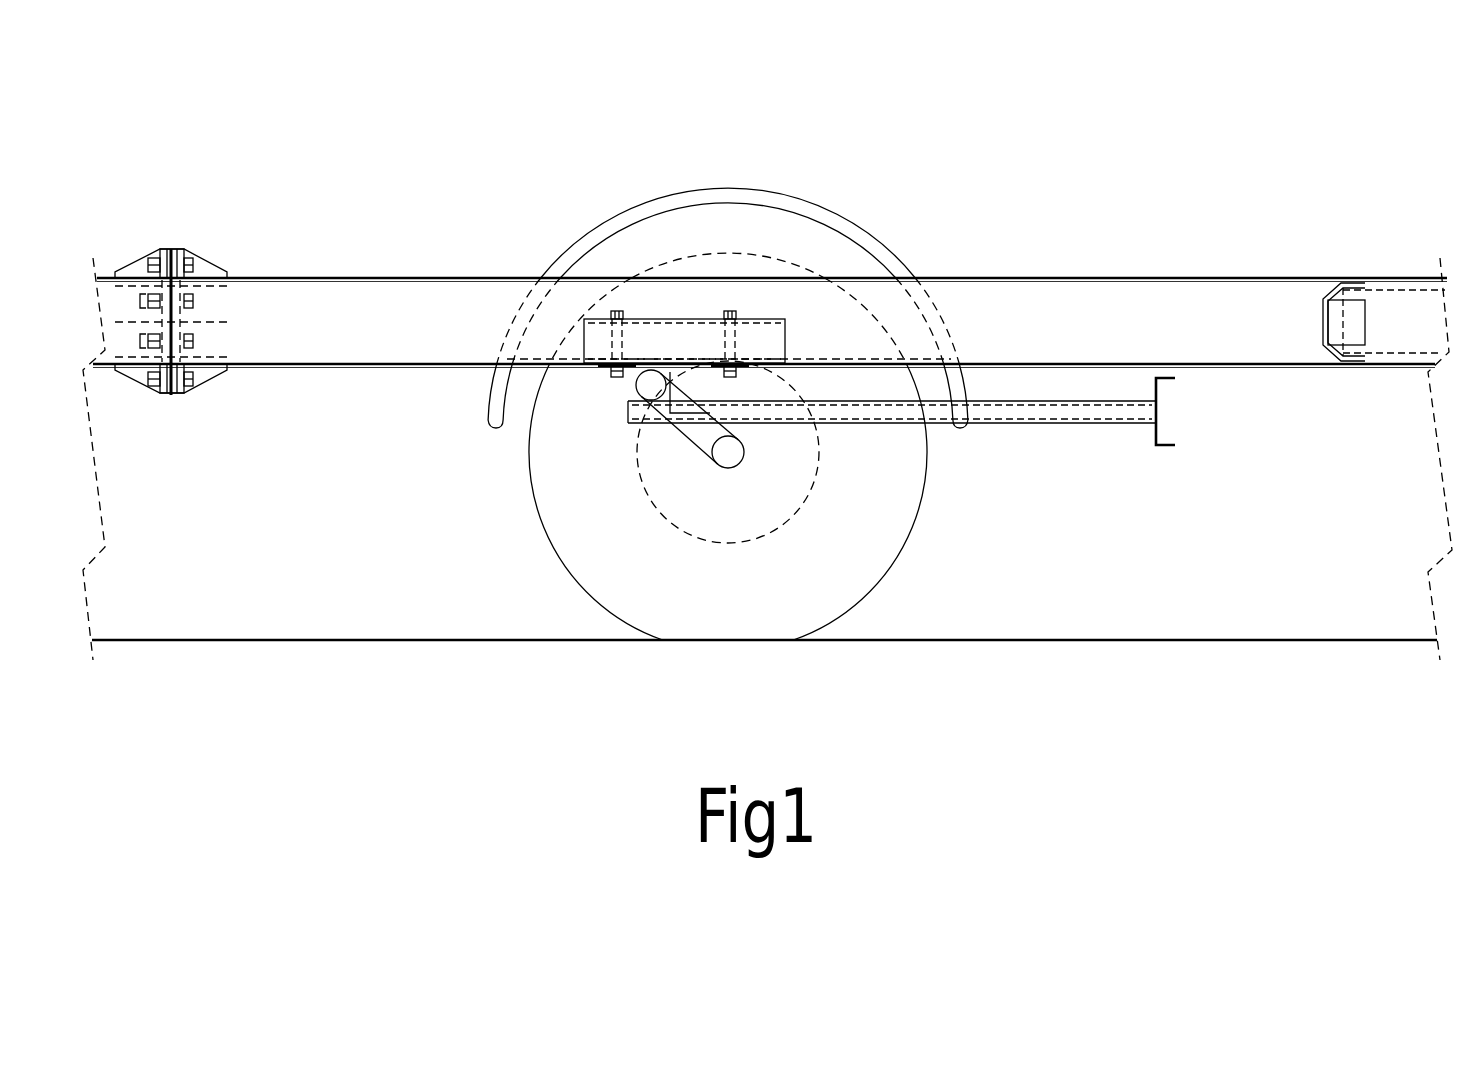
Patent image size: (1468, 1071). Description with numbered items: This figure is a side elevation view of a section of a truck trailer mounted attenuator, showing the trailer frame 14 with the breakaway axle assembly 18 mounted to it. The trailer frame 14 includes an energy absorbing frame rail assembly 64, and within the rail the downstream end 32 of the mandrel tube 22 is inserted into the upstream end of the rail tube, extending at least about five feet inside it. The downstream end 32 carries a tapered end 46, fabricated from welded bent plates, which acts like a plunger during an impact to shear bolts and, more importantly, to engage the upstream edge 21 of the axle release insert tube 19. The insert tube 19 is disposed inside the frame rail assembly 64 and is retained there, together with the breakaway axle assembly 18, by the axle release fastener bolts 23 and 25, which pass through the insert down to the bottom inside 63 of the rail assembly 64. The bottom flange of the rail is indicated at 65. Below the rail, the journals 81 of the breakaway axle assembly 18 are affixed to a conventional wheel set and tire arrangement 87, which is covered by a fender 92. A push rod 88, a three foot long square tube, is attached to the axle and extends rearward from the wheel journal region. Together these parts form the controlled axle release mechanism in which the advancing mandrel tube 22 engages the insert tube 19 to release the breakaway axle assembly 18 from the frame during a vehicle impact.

The trailer frame 14 is at (382, 276).
The breakaway axle assembly 18 is at (728, 294).
The axle release insert tube 19 is at (596, 314).
The upstream edge 21 is at (791, 340).
The mandrel tube 22 is at (1430, 306).
The axle release fastener bolt 23 is at (737, 338).
The axle release fastener bolt 25 is at (623, 338).
The downstream end 32 is at (1373, 264).
The tapered end 46 is at (1324, 296).
The bottom inside 63 is at (290, 359).
The frame rail assembly 64 is at (1012, 276).
The frame rail lower flange 65 is at (415, 368).
The journal 81 is at (648, 389).
The wheel set and tire arrangement 87 is at (614, 569).
The push rod 88 is at (1093, 427).
The fender 92 is at (648, 199).